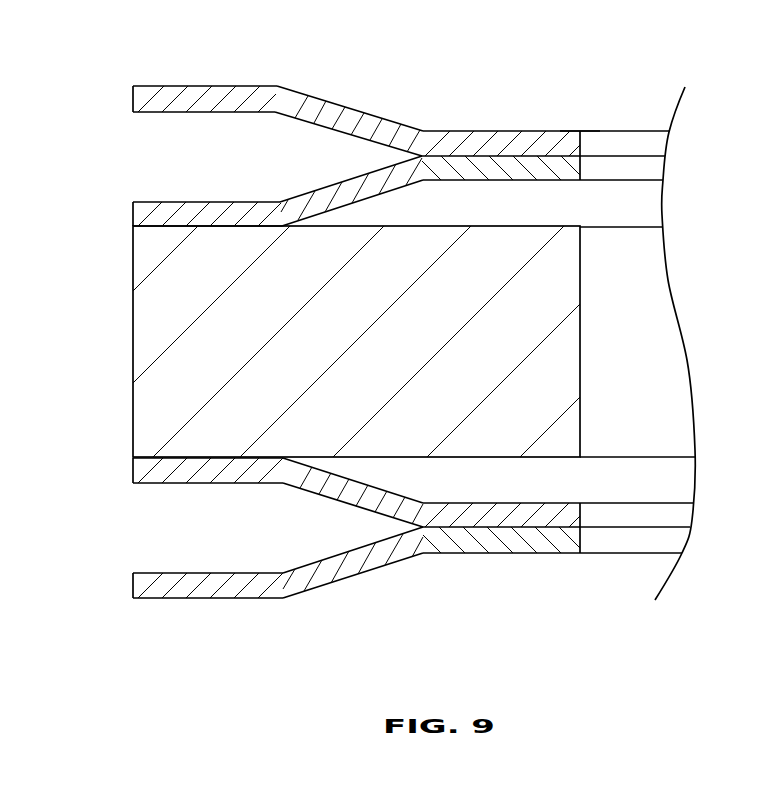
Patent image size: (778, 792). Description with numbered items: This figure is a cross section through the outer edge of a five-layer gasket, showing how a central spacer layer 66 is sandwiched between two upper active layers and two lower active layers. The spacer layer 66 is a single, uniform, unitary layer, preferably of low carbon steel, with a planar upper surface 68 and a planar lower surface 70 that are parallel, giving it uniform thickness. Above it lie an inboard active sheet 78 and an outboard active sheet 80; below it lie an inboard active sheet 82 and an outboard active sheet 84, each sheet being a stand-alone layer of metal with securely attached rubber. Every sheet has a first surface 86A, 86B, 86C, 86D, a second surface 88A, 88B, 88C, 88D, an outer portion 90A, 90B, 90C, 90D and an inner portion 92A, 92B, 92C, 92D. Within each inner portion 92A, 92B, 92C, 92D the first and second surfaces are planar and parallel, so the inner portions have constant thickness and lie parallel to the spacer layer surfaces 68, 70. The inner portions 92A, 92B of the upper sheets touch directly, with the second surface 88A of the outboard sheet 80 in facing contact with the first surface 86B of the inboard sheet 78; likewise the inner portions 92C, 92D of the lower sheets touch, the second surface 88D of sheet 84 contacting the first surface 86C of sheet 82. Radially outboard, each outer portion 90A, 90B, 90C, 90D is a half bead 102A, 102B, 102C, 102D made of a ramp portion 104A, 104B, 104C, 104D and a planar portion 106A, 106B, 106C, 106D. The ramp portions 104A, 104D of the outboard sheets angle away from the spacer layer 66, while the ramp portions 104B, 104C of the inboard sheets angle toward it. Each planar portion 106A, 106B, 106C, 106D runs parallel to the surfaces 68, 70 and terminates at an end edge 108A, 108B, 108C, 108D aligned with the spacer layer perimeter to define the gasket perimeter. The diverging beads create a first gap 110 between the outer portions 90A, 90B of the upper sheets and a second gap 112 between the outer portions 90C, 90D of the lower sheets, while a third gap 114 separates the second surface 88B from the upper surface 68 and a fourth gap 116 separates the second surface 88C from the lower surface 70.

The spacer layer 66 is at (581, 349).
The upper surface 68 is at (627, 226).
The lower surface 70 is at (638, 458).
The inboard active sheet 78 is at (580, 170).
The outboard active sheet 80 is at (580, 139).
The inboard active sheet 82 is at (583, 515).
The outboard active sheet 84 is at (580, 540).
The first surface 86A is at (402, 122).
The first surface 86B is at (343, 179).
The first surface 86C is at (367, 508).
The first surface 86D is at (365, 573).
The second surface 88A is at (318, 122).
The second surface 88B is at (410, 185).
The second surface 88C is at (412, 496).
The second surface 88D is at (302, 566).
The outer portion 90A is at (322, 84).
The outer portion 90B is at (304, 185).
The outer portion 90C is at (285, 498).
The outer portion 90D is at (413, 617).
The inner portion 92A is at (563, 123).
The inner portion 92B is at (515, 184).
The inner portion 92C is at (536, 500).
The inner portion 92D is at (528, 565).
The half bead 102A is at (370, 95).
The half bead 102B is at (380, 196).
The half bead 102C is at (363, 481).
The half bead 102D is at (332, 582).
The ramp portion 104A is at (423, 128).
The ramp portion 104B is at (338, 208).
The ramp portion 104C is at (320, 472).
The ramp portion 104D is at (387, 565).
The planar portion 106A is at (205, 86).
The planar portion 106B is at (190, 202).
The planar portion 106C is at (206, 457).
The planar portion 106D is at (206, 598).
The end edge 108A is at (133, 99).
The end edge 108B is at (133, 214).
The end edge 108C is at (133, 470).
The end edge 108D is at (133, 585).
The first gap 110 is at (145, 155).
The second gap 112 is at (145, 527).
The third gap 114 is at (500, 229).
The fourth gap 116 is at (557, 467).